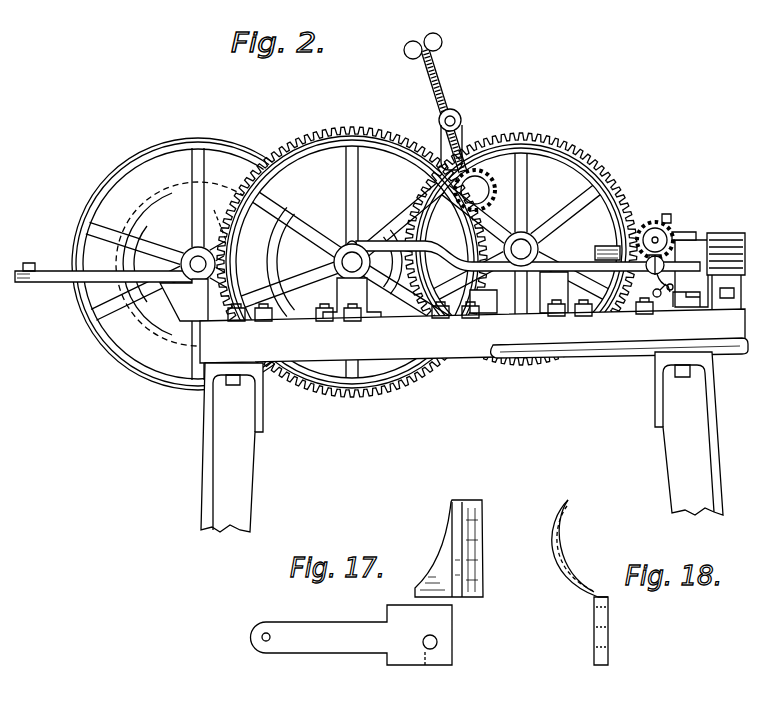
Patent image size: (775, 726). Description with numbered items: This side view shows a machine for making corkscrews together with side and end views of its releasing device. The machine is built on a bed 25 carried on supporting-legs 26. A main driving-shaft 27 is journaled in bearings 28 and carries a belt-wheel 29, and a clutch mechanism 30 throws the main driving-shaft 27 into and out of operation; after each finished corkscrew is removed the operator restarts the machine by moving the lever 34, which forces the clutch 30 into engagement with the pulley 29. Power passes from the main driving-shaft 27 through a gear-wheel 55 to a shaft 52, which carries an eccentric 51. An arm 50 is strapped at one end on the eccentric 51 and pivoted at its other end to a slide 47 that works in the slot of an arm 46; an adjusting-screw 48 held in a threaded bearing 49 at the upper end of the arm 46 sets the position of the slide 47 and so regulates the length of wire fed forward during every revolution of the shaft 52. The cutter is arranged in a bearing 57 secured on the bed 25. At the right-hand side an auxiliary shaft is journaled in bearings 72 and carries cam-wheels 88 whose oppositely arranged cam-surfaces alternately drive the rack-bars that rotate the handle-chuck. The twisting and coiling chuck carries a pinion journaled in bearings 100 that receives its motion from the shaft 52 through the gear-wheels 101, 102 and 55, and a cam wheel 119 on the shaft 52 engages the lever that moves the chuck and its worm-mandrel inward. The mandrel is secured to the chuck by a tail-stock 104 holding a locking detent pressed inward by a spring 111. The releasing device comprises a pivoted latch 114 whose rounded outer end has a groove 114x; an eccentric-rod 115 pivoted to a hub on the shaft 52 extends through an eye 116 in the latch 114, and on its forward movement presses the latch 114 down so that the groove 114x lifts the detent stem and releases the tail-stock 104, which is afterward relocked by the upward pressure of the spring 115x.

In FIG. 2, the bed 25 is at (474, 336).
In FIG. 2, the supporting-legs 26 is at (462, 442).
In FIG. 2, the main driving-shaft 27 is at (188, 255).
In FIG. 2, the bearings 28 is at (170, 322).
In FIG. 2, the belt-wheel 29 is at (190, 140).
In FIG. 2, the clutch mechanism 30 is at (212, 200).
In FIG. 2, the lever 34 is at (46, 270).
In FIG. 2, the arm 46 is at (438, 124).
In FIG. 2, the slide 47 is at (478, 174).
In FIG. 2, the adjusting-screw 48 is at (440, 64).
In FIG. 2, the threaded bearing 49 is at (452, 112).
In FIG. 2, the arm 50 is at (378, 238).
In FIG. 2, the eccentric 51 is at (344, 244).
In FIG. 2, the shaft 52 is at (364, 296).
In FIG. 2, the gear-wheel 55 is at (328, 132).
In FIG. 2, the bearing 57 is at (594, 250).
In FIG. 2, the bearings 72 is at (726, 262).
In FIG. 2, the cam-wheels 88 is at (672, 207).
In FIG. 2, the bearings 100 is at (686, 302).
In FIG. 2, the gear-wheel 101 is at (582, 158).
In FIG. 2, the gear-wheel 102 is at (536, 214).
In FIG. 2, the tail-stock 104 is at (650, 220).
In FIG. 2, the spring 111 is at (686, 232).
In FIG. 2, the latch 114 is at (672, 253).
In FIG. 17, the latch 114 is at (351, 632).
In FIG. 18, the latch 114 is at (580, 592).
In FIG. 17, the groove 114x is at (468, 545).
In FIG. 18, the groove 114x is at (552, 560).
In FIG. 2, the eccentric-rod 115 is at (545, 308).
In FIG. 2, the spring 115x is at (655, 298).
In FIG. 17, the eye 116 is at (440, 640).
In FIG. 2, the cam wheel 119 is at (360, 200).